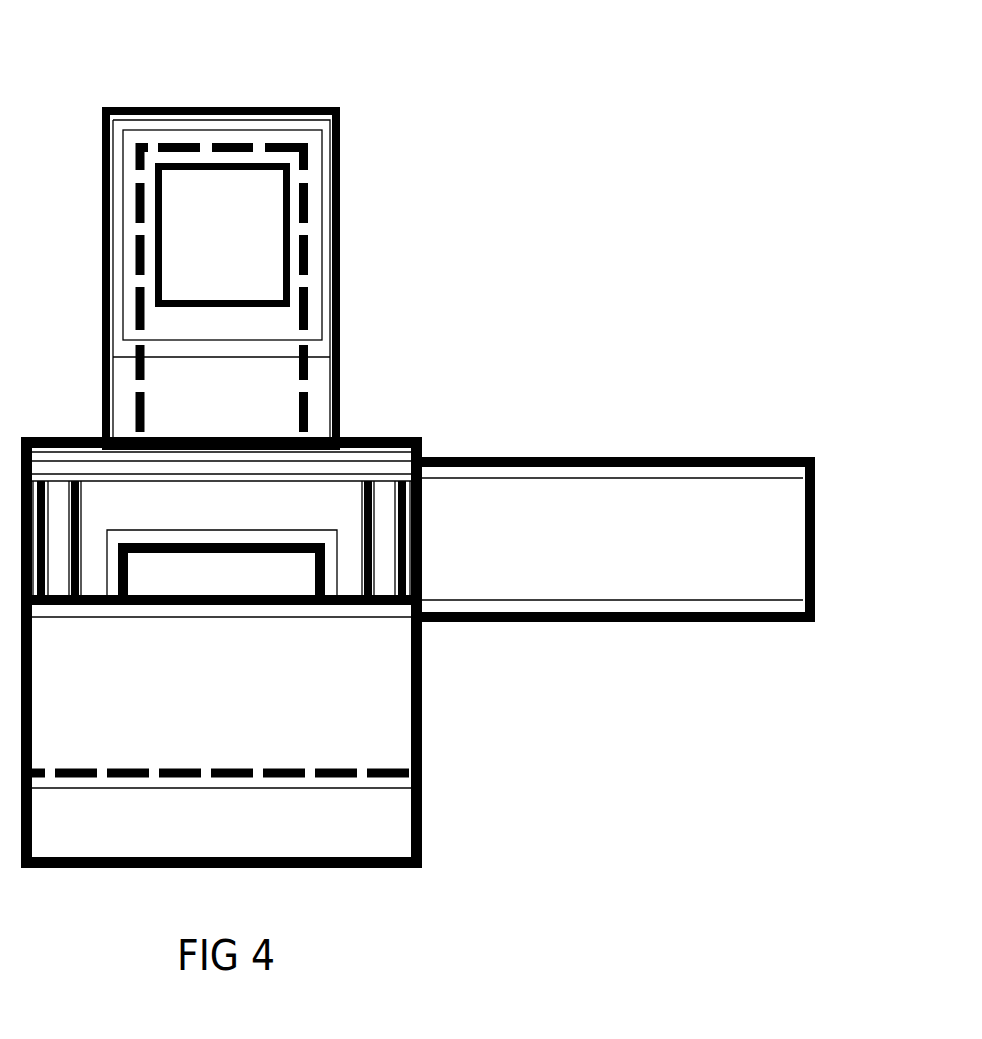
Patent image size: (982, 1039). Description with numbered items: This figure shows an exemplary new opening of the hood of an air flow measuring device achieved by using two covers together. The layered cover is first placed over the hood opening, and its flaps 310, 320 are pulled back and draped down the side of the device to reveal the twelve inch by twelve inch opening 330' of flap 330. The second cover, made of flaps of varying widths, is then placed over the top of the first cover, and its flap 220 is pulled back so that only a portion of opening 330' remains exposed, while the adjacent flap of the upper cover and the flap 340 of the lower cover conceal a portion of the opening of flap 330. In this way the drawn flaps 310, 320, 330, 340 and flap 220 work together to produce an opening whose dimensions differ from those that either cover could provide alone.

The flap 220 is at (797, 442).
The flap 310 is at (307, 193).
The flap 320 is at (327, 105).
The flap 330 is at (224, 501).
The opening 330' is at (221, 543).
The flap 340 is at (385, 495).